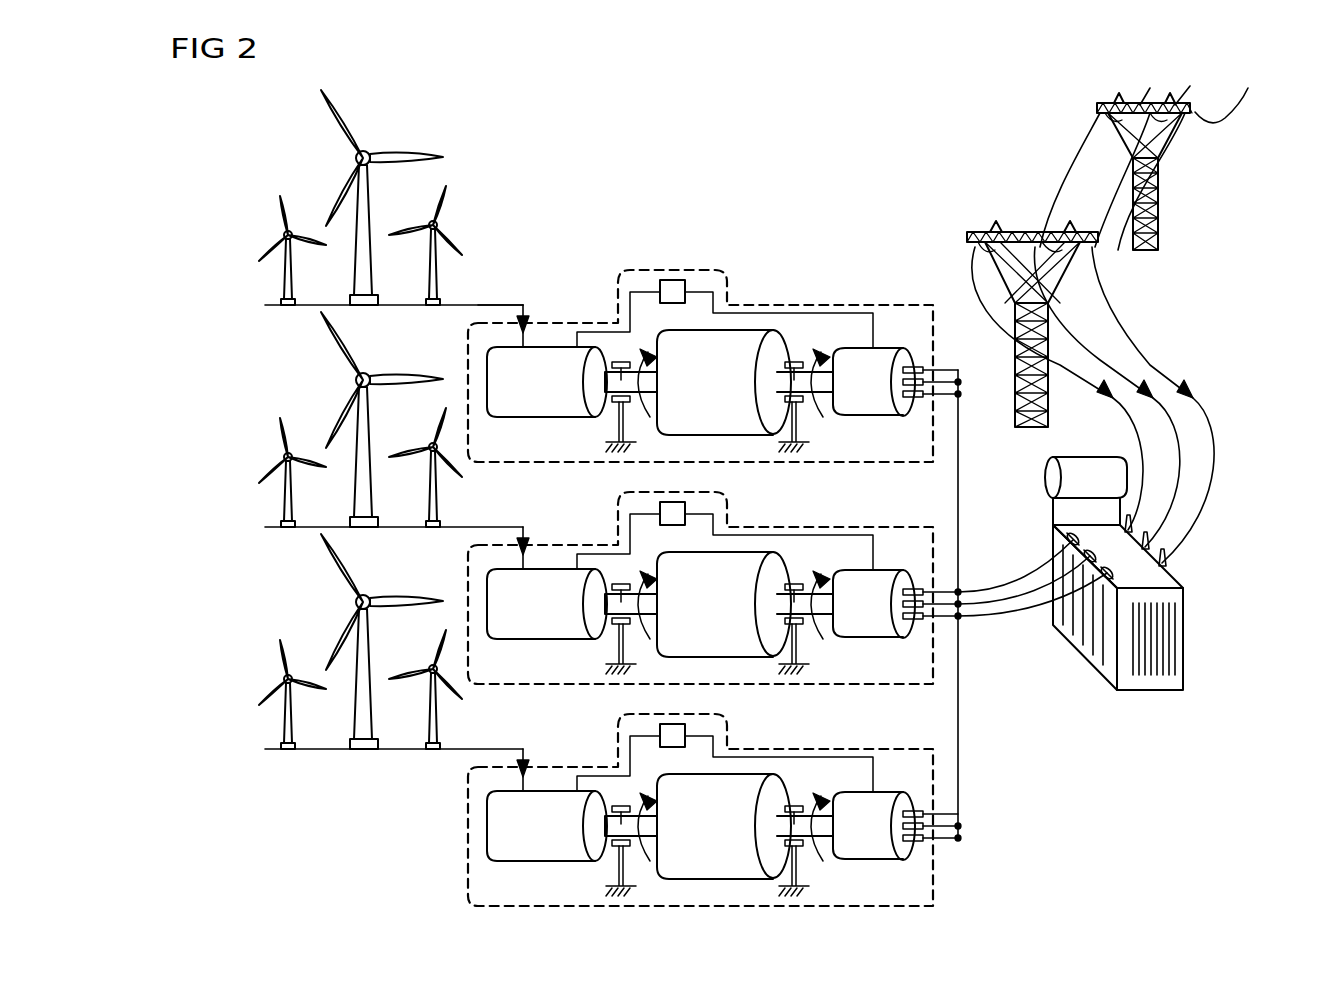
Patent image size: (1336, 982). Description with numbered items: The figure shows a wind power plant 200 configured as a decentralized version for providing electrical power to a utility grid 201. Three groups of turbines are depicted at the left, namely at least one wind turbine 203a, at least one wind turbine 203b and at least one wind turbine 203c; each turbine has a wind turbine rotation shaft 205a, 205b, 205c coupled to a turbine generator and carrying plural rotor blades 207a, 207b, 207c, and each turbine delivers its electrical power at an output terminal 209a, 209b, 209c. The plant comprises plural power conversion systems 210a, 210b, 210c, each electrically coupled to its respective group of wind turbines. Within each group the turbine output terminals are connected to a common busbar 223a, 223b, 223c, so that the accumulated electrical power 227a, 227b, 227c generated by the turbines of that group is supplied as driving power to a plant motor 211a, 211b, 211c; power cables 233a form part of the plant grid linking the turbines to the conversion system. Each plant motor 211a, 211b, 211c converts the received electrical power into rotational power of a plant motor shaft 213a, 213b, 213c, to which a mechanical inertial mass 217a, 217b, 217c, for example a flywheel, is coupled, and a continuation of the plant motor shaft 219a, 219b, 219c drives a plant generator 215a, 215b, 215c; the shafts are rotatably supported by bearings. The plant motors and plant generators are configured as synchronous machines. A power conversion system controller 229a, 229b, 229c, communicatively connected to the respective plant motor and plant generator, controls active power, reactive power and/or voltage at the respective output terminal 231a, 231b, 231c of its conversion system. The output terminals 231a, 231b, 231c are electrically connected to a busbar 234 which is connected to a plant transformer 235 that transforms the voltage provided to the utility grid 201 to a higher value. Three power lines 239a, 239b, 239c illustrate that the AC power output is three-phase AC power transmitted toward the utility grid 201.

The wind power plant 200 is at (966, 194).
The utility grid 201 is at (1128, 405).
The wind turbine 203a is at (298, 181).
The wind turbine 203b is at (346, 419).
The wind turbine 203c is at (346, 662).
The wind turbine rotation shaft 205a is at (369, 150).
The wind turbine rotation shaft 205b is at (318, 448).
The wind turbine rotation shaft 205c is at (318, 670).
The rotor blades 207a is at (425, 153).
The rotor blades 207b is at (342, 380).
The rotor blades 207c is at (342, 602).
The output terminal 209a is at (346, 298).
The output terminal 209b is at (359, 500).
The output terminal 209c is at (368, 770).
The power conversion system 210a is at (933, 303).
The power conversion system 210b is at (709, 610).
The power conversion system 210c is at (710, 826).
The plant motor 211a is at (487, 353).
The plant motor 211b is at (547, 661).
The plant motor 211c is at (547, 872).
The plant motor shaft 213a is at (618, 362).
The plant motor shaft 213b is at (601, 586).
The plant motor shaft 213c is at (616, 873).
The plant generator 215a is at (878, 347).
The plant generator 215b is at (888, 558).
The plant generator 215c is at (878, 873).
The mechanical inertial mass 217a is at (748, 329).
The mechanical inertial mass 217b is at (673, 562).
The mechanical inertial mass 217c is at (724, 864).
The continuation of the plant motor shaft 219a is at (797, 361).
The continuation of the plant motor shaft 219b is at (823, 579).
The continuation of the plant motor shaft 219c is at (791, 873).
The common busbar 223a is at (527, 318).
The common busbar 223b is at (514, 523).
The common busbar 223c is at (514, 745).
The accumulated electrical power 227a is at (500, 346).
The accumulated electrical power 227b is at (459, 559).
The accumulated electrical power 227c is at (460, 782).
The power conversion system controller 229a is at (668, 279).
The power conversion system controller 229b is at (725, 523).
The power conversion system controller 229c is at (725, 745).
The output terminal 231a is at (960, 369).
The output terminal 231b is at (971, 579).
The output terminal 231c is at (971, 797).
The power cables 233a is at (487, 303).
The busbar 234 is at (961, 660).
The plant transformer 235 is at (1212, 604).
The power line 239a is at (1114, 400).
The power line 239b is at (1156, 395).
The power line 239c is at (1196, 400).